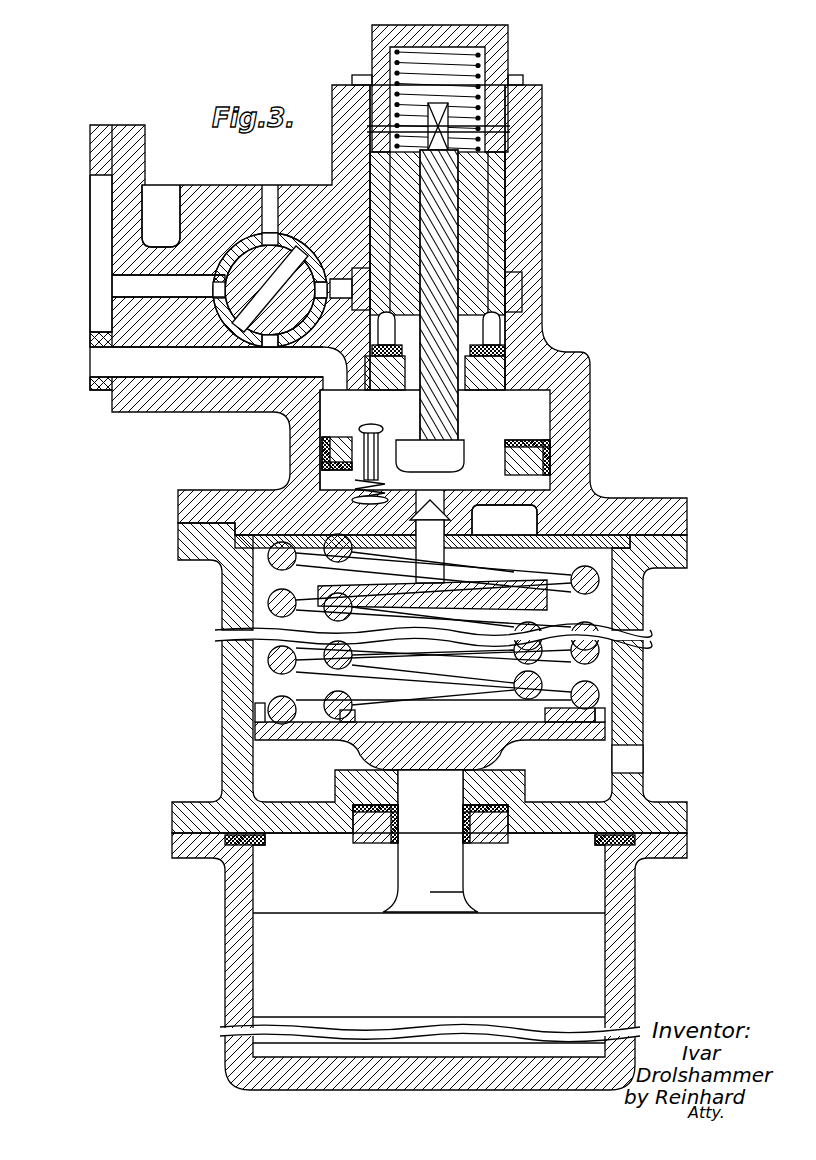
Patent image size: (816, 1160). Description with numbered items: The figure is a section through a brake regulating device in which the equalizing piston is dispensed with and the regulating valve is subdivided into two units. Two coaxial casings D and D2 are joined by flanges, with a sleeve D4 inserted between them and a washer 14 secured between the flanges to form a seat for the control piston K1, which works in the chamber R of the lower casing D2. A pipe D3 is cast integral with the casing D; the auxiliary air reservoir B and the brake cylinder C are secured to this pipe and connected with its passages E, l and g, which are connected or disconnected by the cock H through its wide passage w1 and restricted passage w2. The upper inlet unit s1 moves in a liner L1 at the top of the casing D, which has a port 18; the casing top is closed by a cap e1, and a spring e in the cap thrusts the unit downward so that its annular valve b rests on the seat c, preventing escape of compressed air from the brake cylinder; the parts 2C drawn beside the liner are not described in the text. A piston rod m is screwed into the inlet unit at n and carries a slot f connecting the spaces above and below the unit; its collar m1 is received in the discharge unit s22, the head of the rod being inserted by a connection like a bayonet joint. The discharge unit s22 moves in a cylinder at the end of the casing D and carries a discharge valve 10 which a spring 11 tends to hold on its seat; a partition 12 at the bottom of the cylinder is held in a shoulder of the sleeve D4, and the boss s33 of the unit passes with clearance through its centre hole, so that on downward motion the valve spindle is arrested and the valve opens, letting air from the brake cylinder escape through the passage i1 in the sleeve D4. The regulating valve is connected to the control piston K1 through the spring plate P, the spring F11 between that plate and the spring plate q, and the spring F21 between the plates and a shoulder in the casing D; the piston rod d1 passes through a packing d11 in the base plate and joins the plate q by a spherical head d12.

The casing D is at (530, 136).
The cap e1 is at (500, 52).
The spring e is at (485, 73).
The liner L1 is at (372, 150).
The screw connection n is at (462, 170).
The inlet unit s1 is at (478, 258).
The piston rod m is at (445, 228).
The slot f is at (424, 205).
The nuts 2C is at (503, 300).
The annular valve b is at (497, 338).
The seat c is at (503, 353).
The cock H is at (268, 250).
The pipe D3 is at (156, 258).
The auxiliary air reservoir B is at (106, 217).
The passage E is at (132, 286).
The brake cylinder C is at (100, 365).
The passage g is at (157, 368).
The wide passage w1 is at (248, 320).
The restricted passage w2 is at (288, 330).
The port 18 is at (347, 386).
The discharge valve 10 is at (370, 432).
The spring 11 is at (356, 500).
The passage l is at (322, 456).
The collar m1 is at (450, 468).
The discharge unit s22 is at (545, 492).
The boss s33 is at (478, 515).
The partition 12 is at (518, 542).
The spring plate P is at (320, 587).
The sleeve D4 is at (253, 718).
The passage i1 is at (626, 760).
The spring F21 is at (598, 582).
The spring F11 is at (327, 704).
The spherical head d12 is at (398, 763).
The spring plate q is at (603, 730).
The piston rod d1 is at (456, 874).
The packing d11 is at (400, 828).
The casing D2 is at (630, 958).
The washer 14 is at (217, 860).
The control piston K1 is at (540, 927).
The chamber R is at (278, 1042).